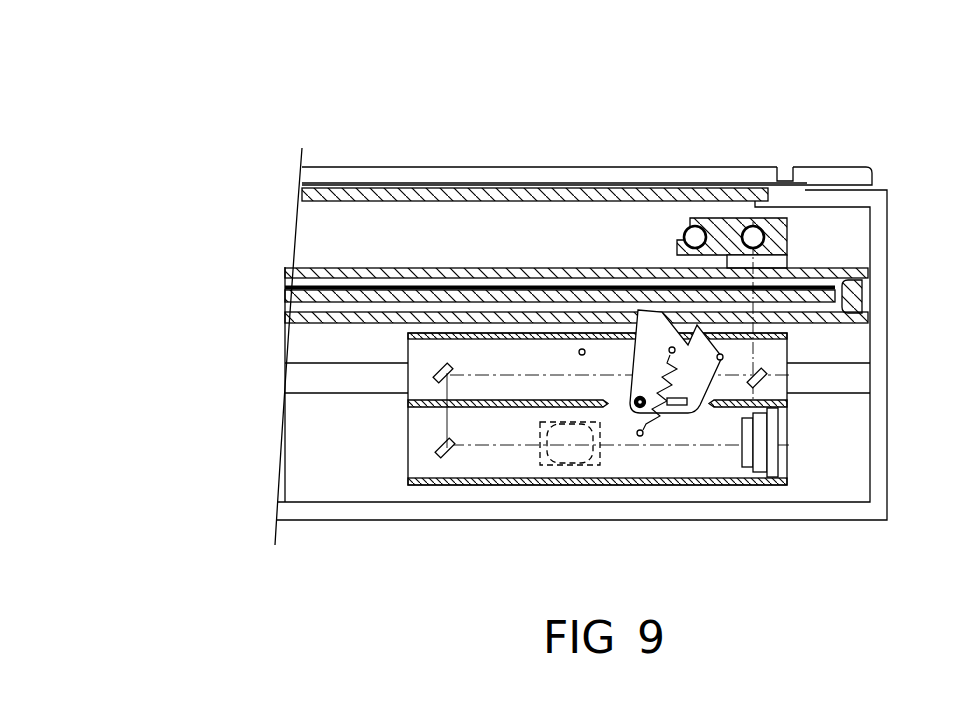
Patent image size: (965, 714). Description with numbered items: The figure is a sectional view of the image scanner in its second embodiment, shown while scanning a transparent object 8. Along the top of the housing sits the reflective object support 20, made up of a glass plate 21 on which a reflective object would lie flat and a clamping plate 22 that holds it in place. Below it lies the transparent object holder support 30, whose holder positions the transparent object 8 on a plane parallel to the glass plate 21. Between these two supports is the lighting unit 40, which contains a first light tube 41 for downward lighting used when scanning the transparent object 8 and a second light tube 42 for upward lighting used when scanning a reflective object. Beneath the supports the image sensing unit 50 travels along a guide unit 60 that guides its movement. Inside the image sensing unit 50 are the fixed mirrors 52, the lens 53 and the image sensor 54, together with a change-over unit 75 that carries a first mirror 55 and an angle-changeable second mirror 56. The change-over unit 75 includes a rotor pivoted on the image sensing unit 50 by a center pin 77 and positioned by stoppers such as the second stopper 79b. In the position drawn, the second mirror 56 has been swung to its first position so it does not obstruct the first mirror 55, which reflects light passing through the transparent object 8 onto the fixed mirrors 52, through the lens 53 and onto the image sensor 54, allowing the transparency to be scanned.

The transparent object 8 is at (488, 287).
The reflective object support 20 is at (280, 178).
The glass plate 21 is at (613, 182).
The clamping plate 22 is at (748, 173).
The transparent object holder support 30 is at (265, 276).
The lighting unit 40 is at (770, 227).
The first light tube 41 is at (765, 238).
The second light tube 42 is at (688, 234).
The image sensing unit 50 is at (643, 466).
The fixed mirrors 52 is at (440, 368).
The lens 53 is at (568, 462).
The image sensor 54 is at (775, 452).
The first mirror 55 is at (765, 372).
The second mirror 56 is at (676, 410).
The guide unit 60 is at (830, 378).
The change-over unit 75 is at (674, 462).
The center pin 77 is at (634, 400).
The second stopper 79b is at (578, 352).